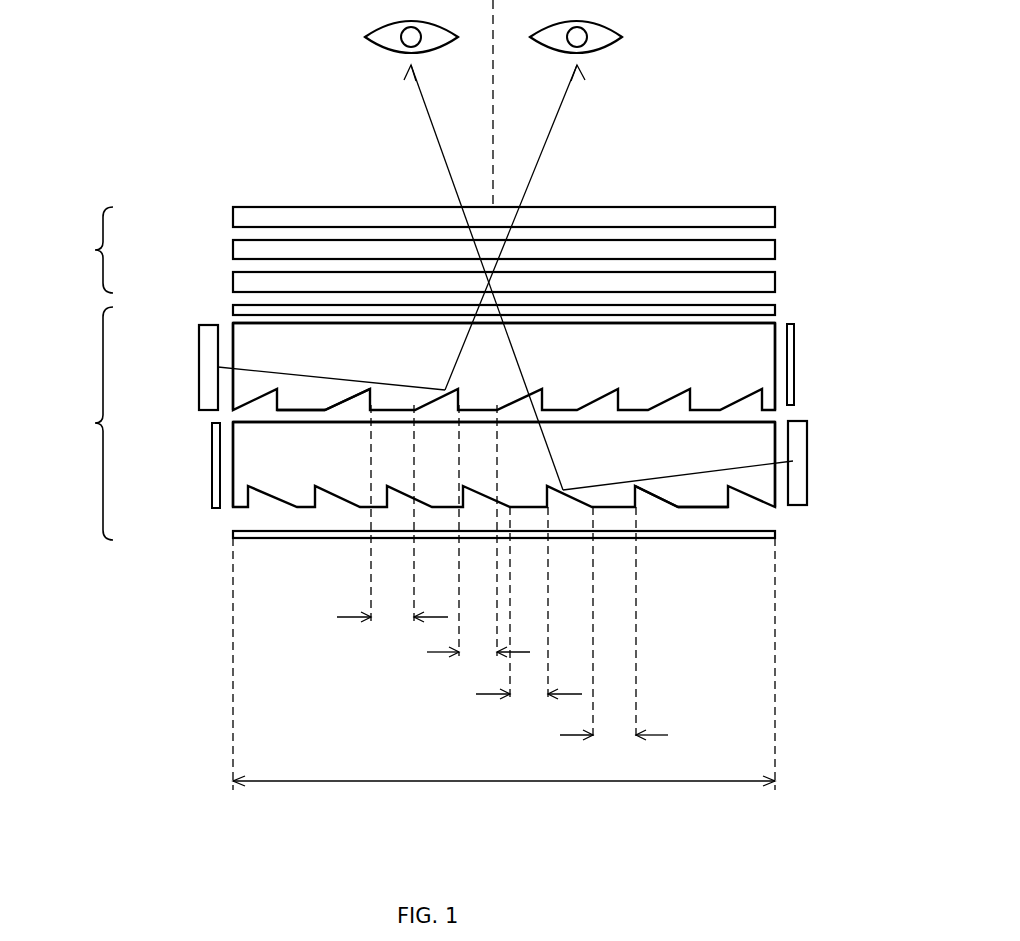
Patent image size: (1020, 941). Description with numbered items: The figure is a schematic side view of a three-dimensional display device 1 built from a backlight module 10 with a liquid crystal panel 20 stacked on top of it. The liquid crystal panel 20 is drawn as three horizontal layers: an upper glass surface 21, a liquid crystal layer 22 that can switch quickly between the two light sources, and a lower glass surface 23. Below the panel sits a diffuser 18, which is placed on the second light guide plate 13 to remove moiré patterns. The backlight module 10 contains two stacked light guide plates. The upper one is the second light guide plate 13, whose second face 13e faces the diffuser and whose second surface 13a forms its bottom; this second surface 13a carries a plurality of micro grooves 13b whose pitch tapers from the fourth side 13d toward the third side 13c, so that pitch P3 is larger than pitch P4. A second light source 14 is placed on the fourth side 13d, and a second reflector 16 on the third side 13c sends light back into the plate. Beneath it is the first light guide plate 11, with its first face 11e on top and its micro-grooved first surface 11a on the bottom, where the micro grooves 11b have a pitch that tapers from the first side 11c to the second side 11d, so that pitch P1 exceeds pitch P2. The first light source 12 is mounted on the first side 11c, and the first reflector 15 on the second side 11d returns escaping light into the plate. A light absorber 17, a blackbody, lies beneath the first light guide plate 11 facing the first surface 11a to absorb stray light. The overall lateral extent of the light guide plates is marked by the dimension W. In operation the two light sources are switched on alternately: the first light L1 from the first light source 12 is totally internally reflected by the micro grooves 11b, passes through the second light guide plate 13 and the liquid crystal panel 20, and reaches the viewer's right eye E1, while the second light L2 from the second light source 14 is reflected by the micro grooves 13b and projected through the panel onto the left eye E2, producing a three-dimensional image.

The 3D display device 1 is at (195, 156).
The backlight module 10 is at (438, 423).
The first light guide plate 11 is at (765, 457).
The first surface 11a is at (700, 507).
The micro grooves 11b is at (645, 498).
The first side 11c is at (778, 487).
The second side 11d is at (233, 493).
The first face 11e is at (765, 413).
The first light source 12 is at (802, 433).
The second light guide plate 13 is at (765, 368).
The second surface 13a is at (286, 412).
The micro grooves 13b is at (356, 402).
The third side 13c is at (775, 343).
The fourth side 13d is at (233, 337).
The second face 13e is at (765, 318).
The second light source 14 is at (218, 367).
The first reflector 15 is at (216, 437).
The second reflector 16 is at (794, 395).
The light absorber 17 is at (233, 534).
The diffuser 18 is at (767, 308).
The liquid crystal panel 20 is at (421, 250).
The upper glass surface 21 is at (767, 215).
The liquid crystal layer 22 is at (767, 248).
The lower glass surface 23 is at (767, 282).
The right eye E1 is at (365, 38).
The left eye E2 is at (622, 37).
The first light L1 is at (429, 118).
The second light L2 is at (555, 118).
The pitch P1 is at (614, 723).
The pitch P2 is at (529, 682).
The pitch P3 is at (392, 606).
The pitch P4 is at (478, 640).
The width of light guide plate W is at (504, 768).